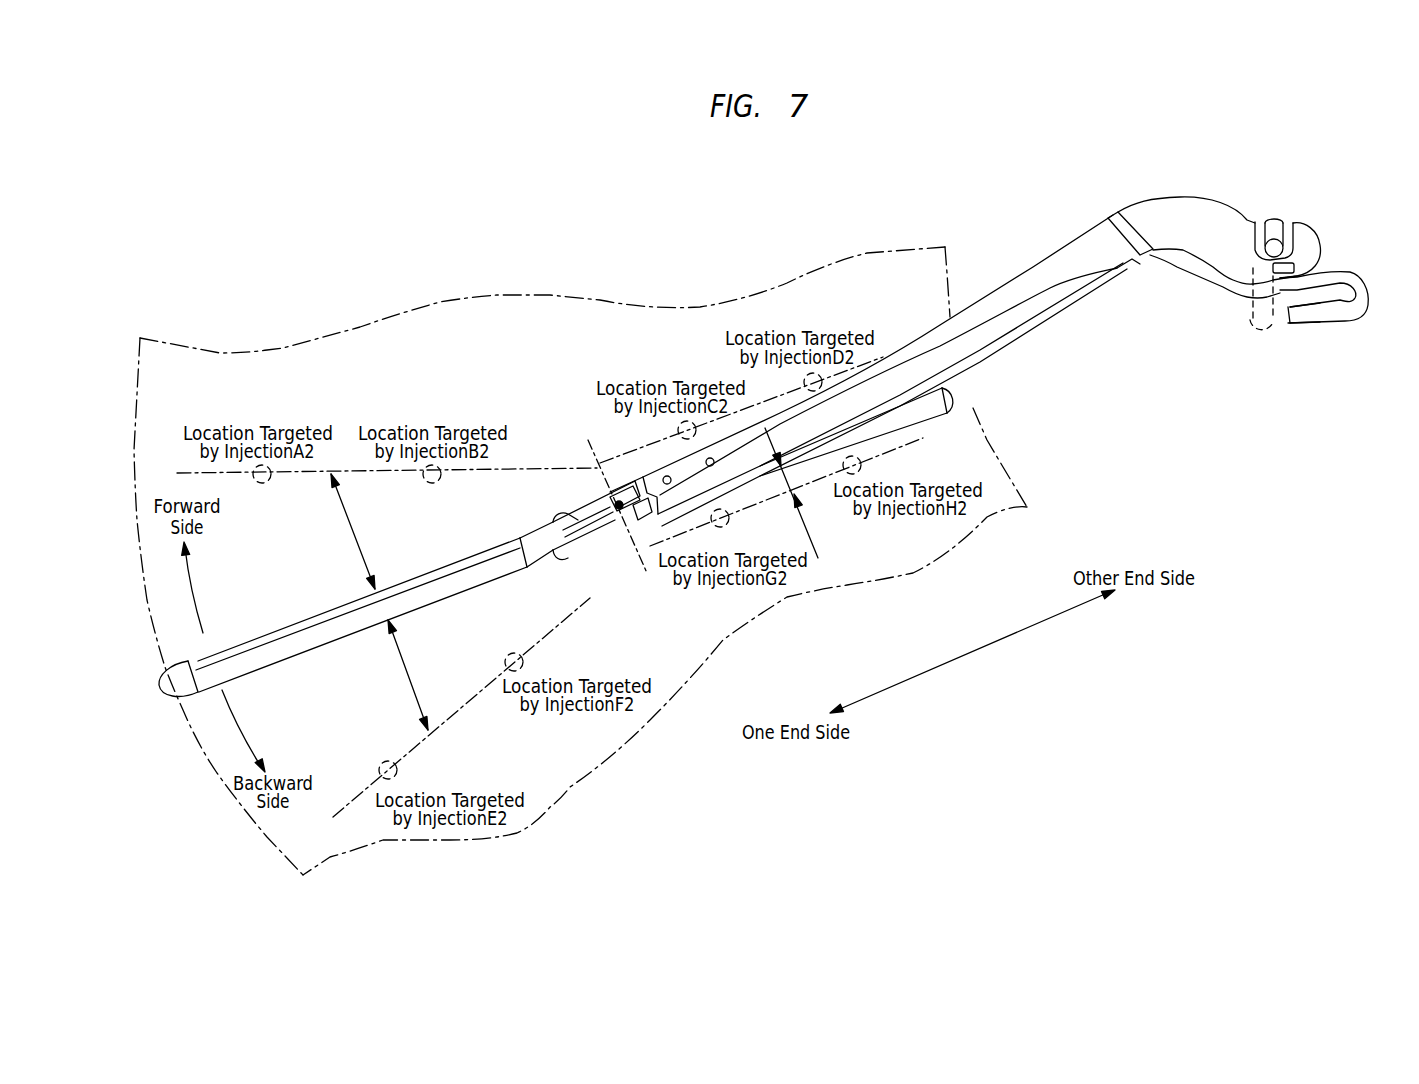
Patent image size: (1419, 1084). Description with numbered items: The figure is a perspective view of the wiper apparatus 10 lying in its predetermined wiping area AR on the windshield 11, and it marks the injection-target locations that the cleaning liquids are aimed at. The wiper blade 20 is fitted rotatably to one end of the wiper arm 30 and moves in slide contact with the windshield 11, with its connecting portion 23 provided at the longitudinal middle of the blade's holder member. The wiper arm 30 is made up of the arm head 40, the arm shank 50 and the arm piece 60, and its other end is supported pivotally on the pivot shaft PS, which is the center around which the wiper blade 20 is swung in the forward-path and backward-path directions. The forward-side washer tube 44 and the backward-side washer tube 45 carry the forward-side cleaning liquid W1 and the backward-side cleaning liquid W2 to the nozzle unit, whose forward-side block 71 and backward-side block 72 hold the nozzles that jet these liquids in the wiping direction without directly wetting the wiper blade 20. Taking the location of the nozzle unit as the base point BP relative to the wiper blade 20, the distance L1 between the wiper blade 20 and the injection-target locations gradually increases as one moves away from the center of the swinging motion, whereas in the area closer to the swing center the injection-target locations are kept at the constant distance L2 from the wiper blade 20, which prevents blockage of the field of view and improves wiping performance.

The wiper apparatus 10 is at (1108, 400).
The windshield 11 is at (427, 370).
The wiper blade 20 is at (307, 652).
The connecting portion 23 is at (522, 523).
The wiper arm 30 is at (1020, 253).
The arm head 40 is at (1219, 231).
The forward-side washer tube 44 is at (1320, 323).
The backward-side washer tube 45 is at (1343, 270).
The arm shank 50 is at (1023, 317).
The arm piece 60 is at (626, 507).
The forward-side block 71 is at (600, 500).
The backward-side block 72 is at (640, 530).
The wiping area AR is at (268, 350).
The base point BP is at (616, 503).
The pivot shaft PS is at (1268, 220).
The distance L1 is at (385, 602).
The constant distance L2 is at (809, 497).
The forward-side cleaning liquid W1 is at (1266, 336).
The backward-side cleaning liquid W2 is at (1262, 308).